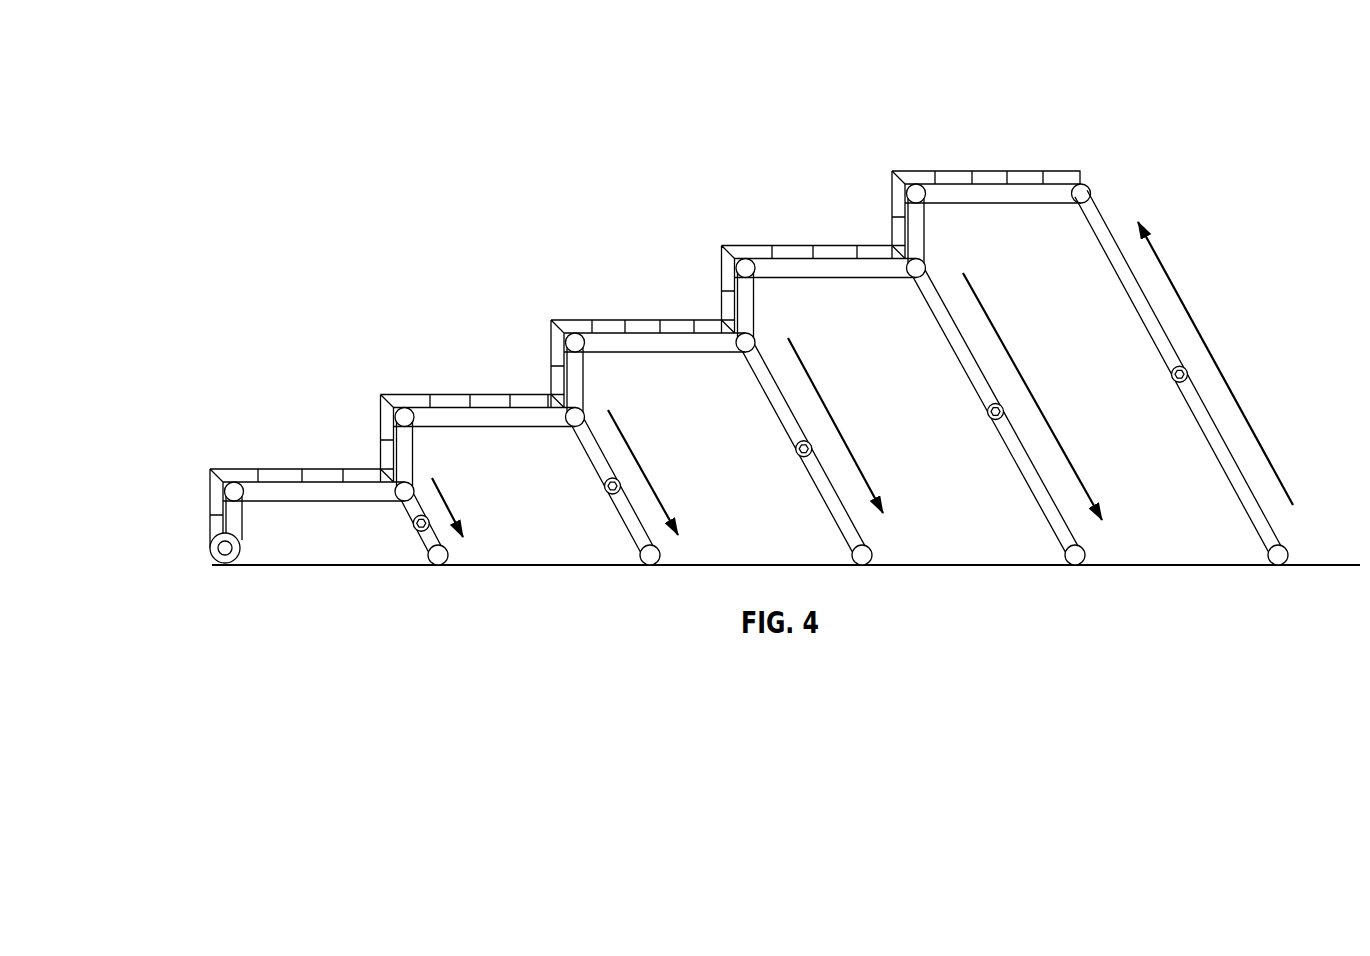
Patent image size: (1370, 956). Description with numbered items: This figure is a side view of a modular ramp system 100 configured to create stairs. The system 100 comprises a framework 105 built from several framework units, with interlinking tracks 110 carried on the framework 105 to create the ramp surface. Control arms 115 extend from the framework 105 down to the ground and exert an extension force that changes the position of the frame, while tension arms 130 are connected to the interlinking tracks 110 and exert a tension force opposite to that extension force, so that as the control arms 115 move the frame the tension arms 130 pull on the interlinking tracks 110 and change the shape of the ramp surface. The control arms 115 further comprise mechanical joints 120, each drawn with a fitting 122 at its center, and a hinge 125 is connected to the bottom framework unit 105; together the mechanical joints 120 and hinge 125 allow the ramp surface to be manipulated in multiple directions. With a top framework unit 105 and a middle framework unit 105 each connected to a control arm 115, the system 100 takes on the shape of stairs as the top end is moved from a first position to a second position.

The modular ramp system 100 is at (565, 177).
The framework 105 is at (1002, 205).
The interlinking tracks 110 is at (1060, 172).
The control arm 115 is at (1152, 175).
The mechanical joints 120 is at (989, 415).
The fastener 122 is at (988, 405).
The hinge 125 is at (213, 560).
The tension arm 130 is at (835, 553).